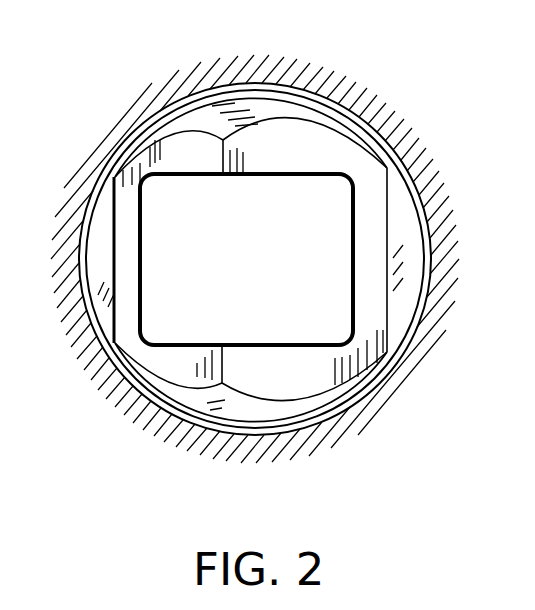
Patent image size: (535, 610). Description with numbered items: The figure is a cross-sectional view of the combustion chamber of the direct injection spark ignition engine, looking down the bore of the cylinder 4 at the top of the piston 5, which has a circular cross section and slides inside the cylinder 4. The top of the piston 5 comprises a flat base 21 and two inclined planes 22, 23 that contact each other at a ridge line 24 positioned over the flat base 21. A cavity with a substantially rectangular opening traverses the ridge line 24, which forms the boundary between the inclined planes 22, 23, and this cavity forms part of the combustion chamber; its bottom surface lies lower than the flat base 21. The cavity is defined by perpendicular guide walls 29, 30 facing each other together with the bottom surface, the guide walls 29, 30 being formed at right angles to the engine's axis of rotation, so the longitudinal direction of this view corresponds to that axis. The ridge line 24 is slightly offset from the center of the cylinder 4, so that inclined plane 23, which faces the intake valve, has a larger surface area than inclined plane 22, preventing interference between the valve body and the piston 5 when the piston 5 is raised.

The cylinder 4 is at (293, 90).
The piston 5 is at (100, 180).
The flat base 21 is at (403, 234).
The inclined plane 22 is at (170, 368).
The inclined plane 23 is at (315, 378).
The ridge line 24 is at (217, 164).
The guide wall 29 is at (300, 176).
The guide wall 30 is at (266, 343).